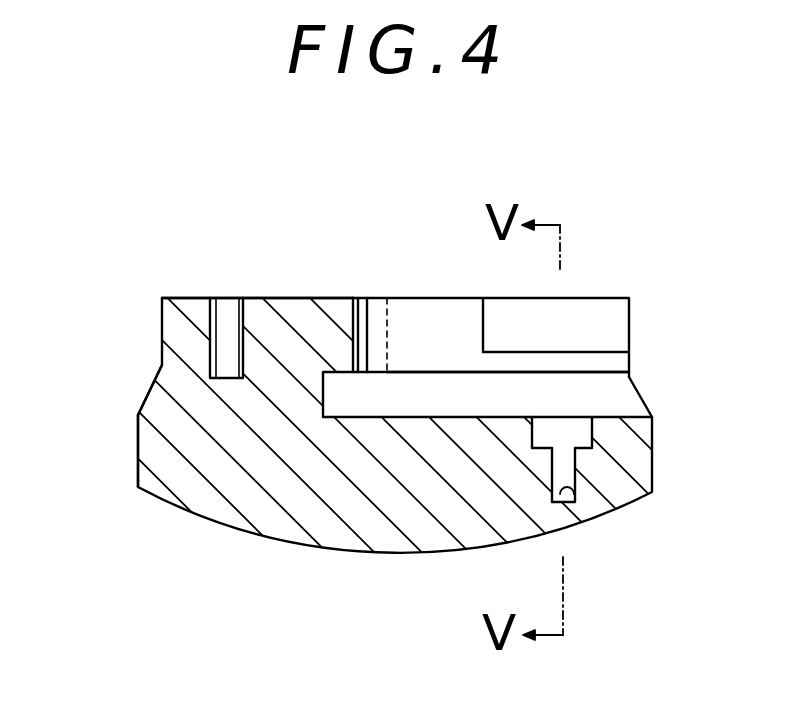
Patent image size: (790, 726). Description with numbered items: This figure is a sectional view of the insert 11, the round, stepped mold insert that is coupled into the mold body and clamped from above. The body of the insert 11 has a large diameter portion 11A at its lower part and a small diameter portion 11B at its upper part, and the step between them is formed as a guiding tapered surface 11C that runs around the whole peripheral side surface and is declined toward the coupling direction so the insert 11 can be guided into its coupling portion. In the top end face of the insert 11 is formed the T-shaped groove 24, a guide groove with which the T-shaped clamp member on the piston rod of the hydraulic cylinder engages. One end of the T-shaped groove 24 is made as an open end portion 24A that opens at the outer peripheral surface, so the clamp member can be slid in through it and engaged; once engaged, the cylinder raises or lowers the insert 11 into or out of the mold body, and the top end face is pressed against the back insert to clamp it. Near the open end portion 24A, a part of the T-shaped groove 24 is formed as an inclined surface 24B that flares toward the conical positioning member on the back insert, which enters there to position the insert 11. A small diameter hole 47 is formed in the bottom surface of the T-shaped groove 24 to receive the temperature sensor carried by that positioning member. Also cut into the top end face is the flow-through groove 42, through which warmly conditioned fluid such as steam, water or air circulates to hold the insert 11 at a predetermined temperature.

The insert 11 is at (273, 507).
The large diameter portion 11A is at (138, 447).
The small diameter portion 11B is at (162, 312).
The guiding tapered surface 11C is at (153, 387).
The flow-through groove 42 is at (225, 372).
The T-shaped groove 24 is at (367, 318).
The open end portion 24A is at (630, 363).
The inclined surface 24B is at (590, 312).
The small diameter hole 47 is at (577, 493).